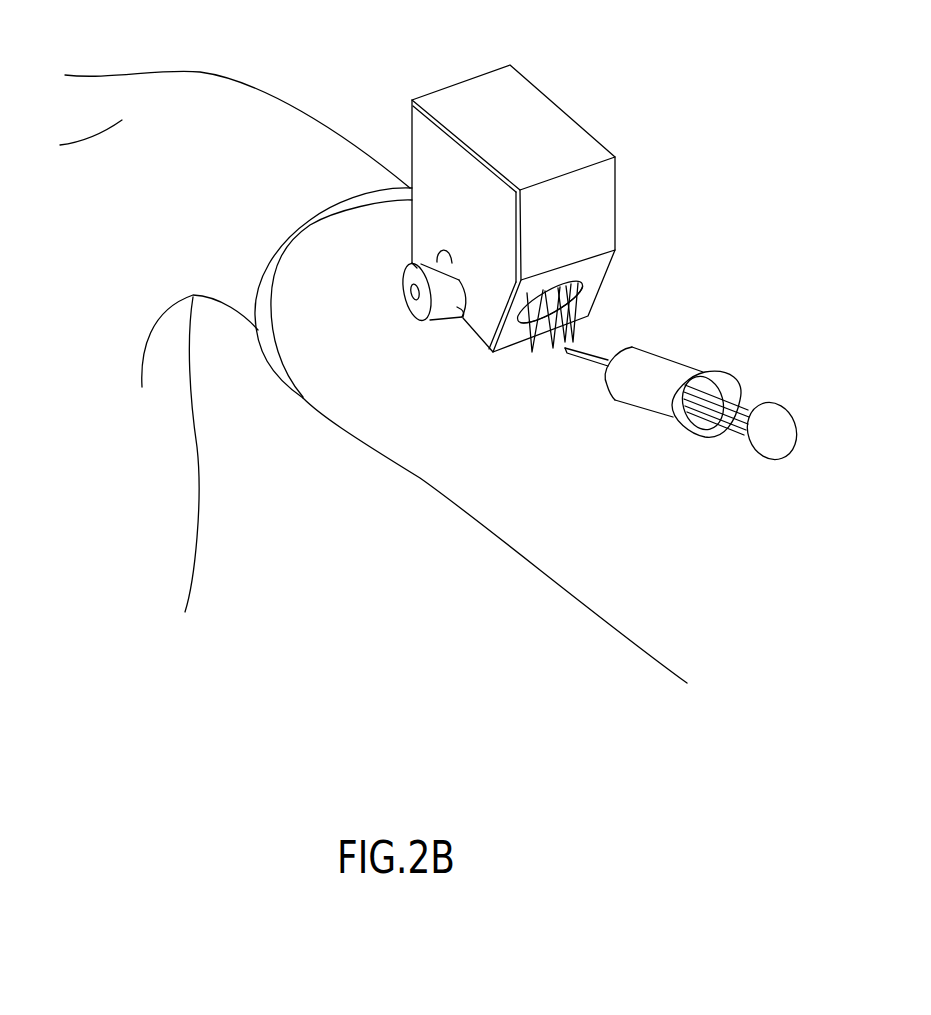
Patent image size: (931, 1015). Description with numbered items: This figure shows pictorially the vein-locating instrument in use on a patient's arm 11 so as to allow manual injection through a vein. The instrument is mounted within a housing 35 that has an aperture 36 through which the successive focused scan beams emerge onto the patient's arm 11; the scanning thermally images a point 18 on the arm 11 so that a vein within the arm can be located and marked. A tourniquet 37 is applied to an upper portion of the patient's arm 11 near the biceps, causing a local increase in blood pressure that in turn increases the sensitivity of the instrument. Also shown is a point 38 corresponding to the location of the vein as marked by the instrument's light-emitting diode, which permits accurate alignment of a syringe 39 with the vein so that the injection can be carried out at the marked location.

The patient's arm 11 is at (533, 512).
The point on the arm 18 is at (530, 363).
The housing 35 is at (585, 220).
The aperture 36 is at (597, 297).
The tourniquet 37 is at (322, 207).
The point corresponding to the location of a vein 38 is at (567, 349).
The syringe 39 is at (680, 372).